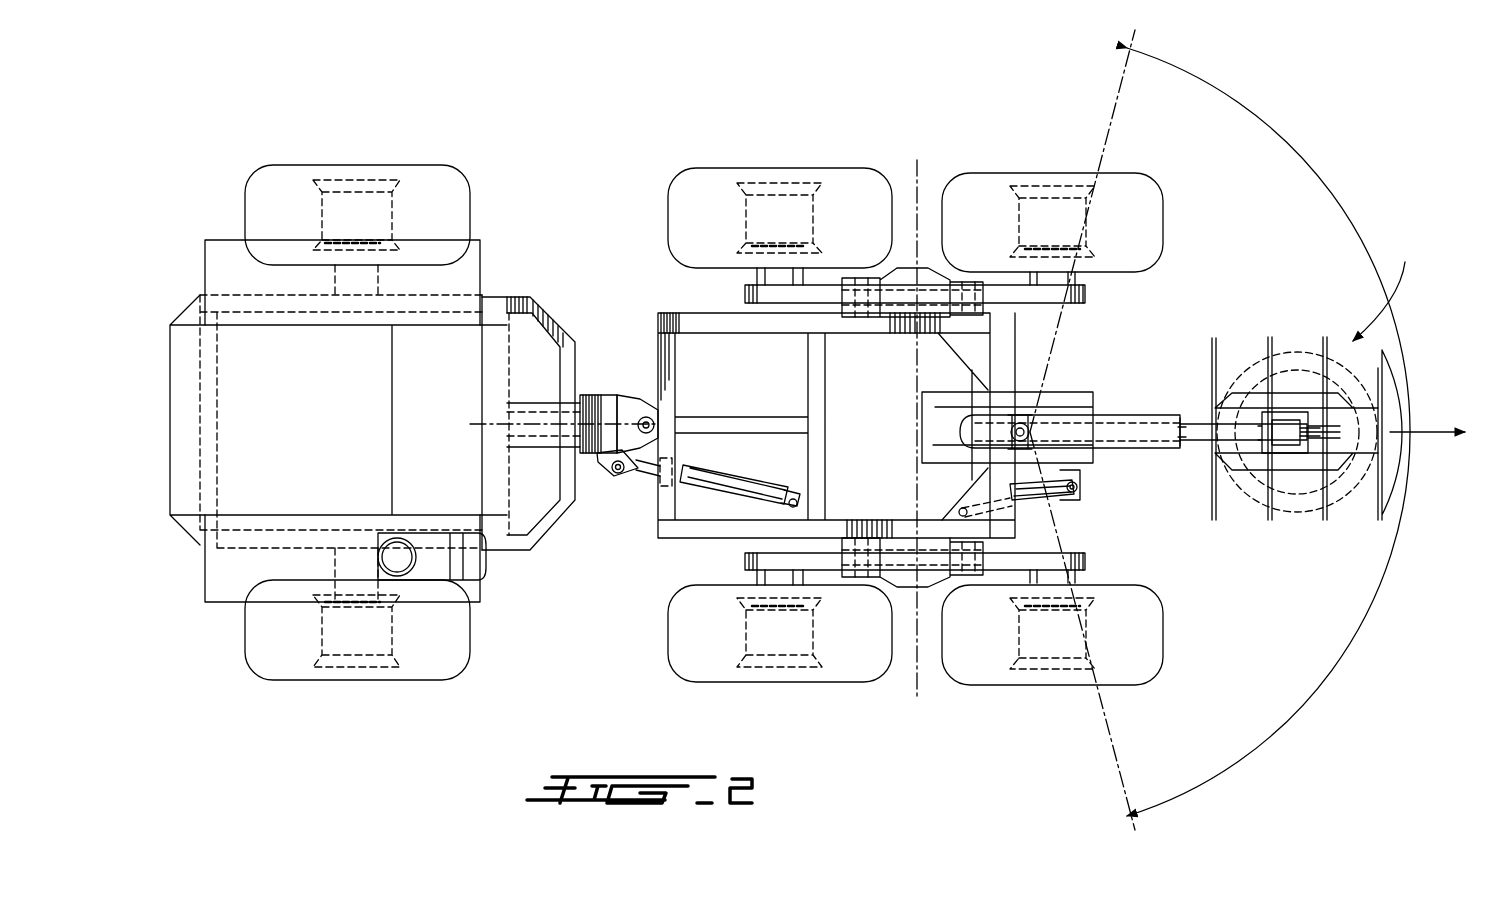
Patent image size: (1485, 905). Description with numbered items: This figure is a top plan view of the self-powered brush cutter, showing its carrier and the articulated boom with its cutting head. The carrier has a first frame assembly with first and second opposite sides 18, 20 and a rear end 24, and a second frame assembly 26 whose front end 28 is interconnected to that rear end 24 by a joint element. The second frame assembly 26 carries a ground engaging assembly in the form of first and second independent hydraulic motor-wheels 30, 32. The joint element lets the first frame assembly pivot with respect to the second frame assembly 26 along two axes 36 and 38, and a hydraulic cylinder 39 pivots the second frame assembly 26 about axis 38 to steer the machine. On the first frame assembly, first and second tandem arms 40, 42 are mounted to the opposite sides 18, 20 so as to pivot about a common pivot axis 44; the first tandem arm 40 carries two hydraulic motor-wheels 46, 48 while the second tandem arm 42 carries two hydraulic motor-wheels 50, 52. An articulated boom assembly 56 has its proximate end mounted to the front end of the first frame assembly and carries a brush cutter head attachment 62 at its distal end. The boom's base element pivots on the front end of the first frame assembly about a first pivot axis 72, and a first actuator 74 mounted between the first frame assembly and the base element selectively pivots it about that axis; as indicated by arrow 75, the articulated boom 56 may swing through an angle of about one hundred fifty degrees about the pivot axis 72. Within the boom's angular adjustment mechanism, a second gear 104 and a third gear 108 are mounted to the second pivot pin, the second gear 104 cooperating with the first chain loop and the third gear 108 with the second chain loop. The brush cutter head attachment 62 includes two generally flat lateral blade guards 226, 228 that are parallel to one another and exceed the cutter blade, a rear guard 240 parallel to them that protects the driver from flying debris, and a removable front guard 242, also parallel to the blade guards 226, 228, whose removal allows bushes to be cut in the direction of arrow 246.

The first side 18 is at (857, 336).
The second side 20 is at (865, 518).
The rear end 24 is at (653, 522).
The second frame assembly 26 is at (327, 510).
The front end 28 is at (573, 512).
The first hydraulic motor-wheel 30 is at (350, 243).
The second hydraulic motor-wheel 32 is at (350, 605).
The pivot axis 36 is at (488, 425).
The steering pivot axis 38 is at (645, 410).
The hydraulic cylinder 39 is at (733, 473).
The first tandem arm 40 is at (1087, 296).
The second tandem arm 42 is at (1085, 565).
The common pivot axis 44 is at (917, 690).
The hydraulic motor-wheel 46 is at (1087, 208).
The hydraulic motor-wheel 48 is at (783, 218).
The hydraulic motor-wheel 50 is at (1070, 607).
The hydraulic motor-wheel 52 is at (790, 607).
The articulated boom assembly 56 is at (1172, 413).
The brush cutter head attachment 62 is at (1391, 292).
The first pivot axis 72 is at (1038, 425).
The first actuator 74 is at (1027, 500).
The arrow 75 is at (1360, 680).
The second gear 104 is at (1247, 388).
The third gear 108 is at (1247, 460).
The lateral blade guard 226 is at (1325, 524).
The lateral blade guard 228 is at (1268, 524).
The rear guard 240 is at (1212, 524).
The front guard 242 is at (1383, 497).
The arrow 246 is at (1432, 468).